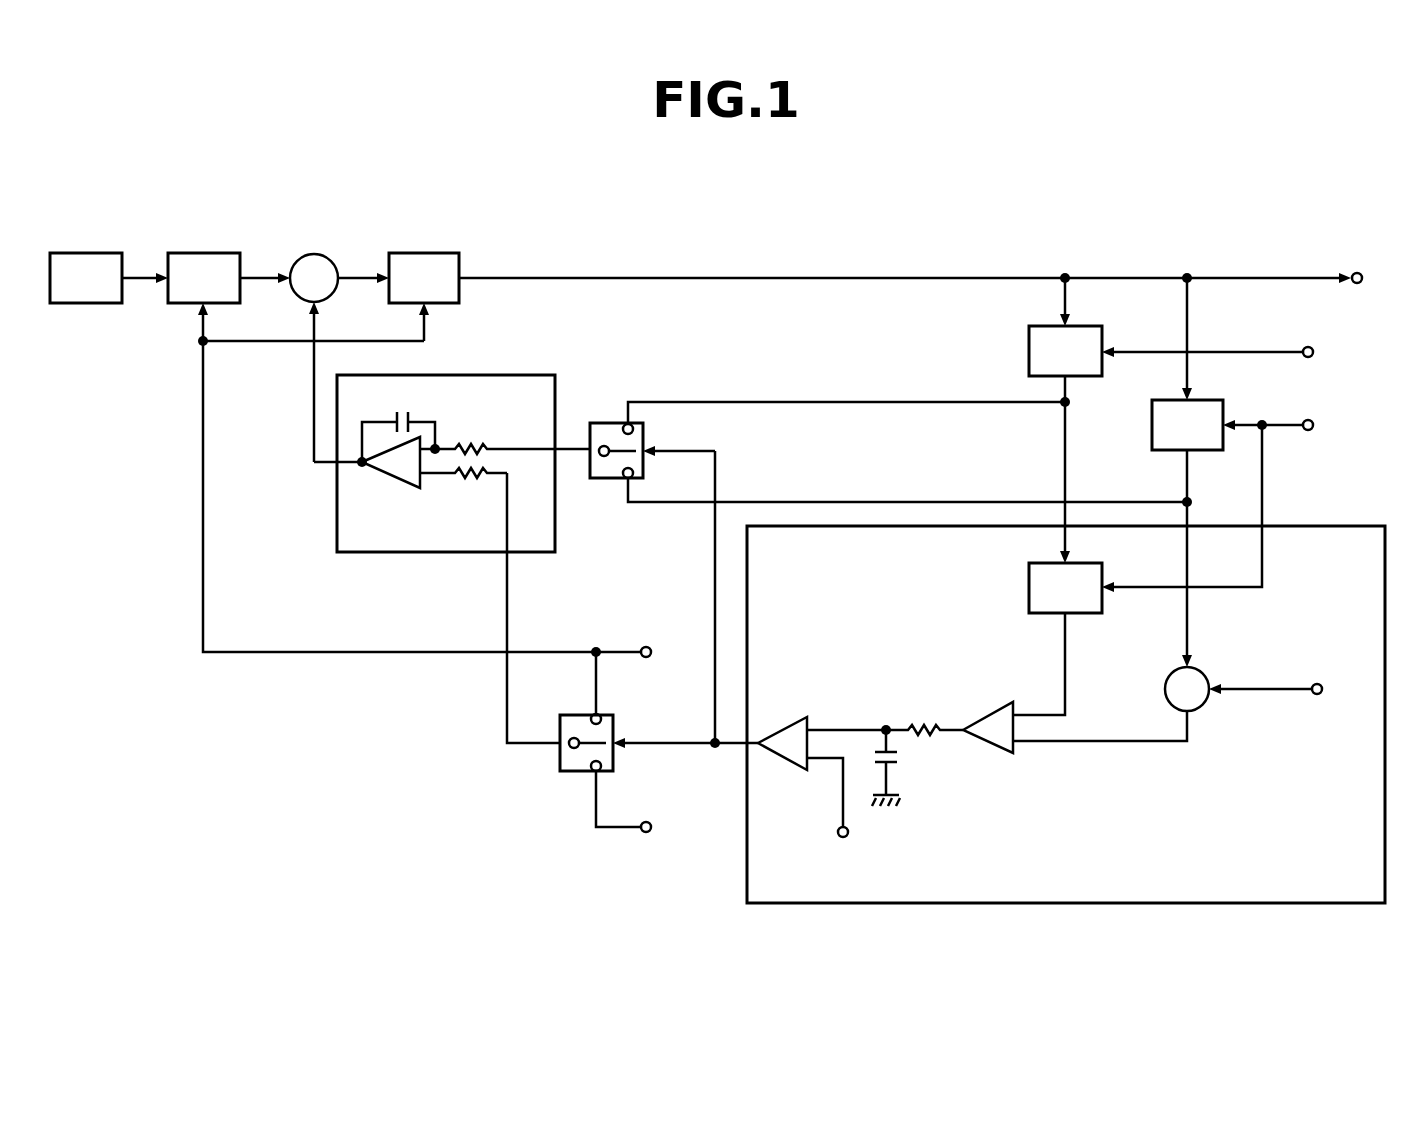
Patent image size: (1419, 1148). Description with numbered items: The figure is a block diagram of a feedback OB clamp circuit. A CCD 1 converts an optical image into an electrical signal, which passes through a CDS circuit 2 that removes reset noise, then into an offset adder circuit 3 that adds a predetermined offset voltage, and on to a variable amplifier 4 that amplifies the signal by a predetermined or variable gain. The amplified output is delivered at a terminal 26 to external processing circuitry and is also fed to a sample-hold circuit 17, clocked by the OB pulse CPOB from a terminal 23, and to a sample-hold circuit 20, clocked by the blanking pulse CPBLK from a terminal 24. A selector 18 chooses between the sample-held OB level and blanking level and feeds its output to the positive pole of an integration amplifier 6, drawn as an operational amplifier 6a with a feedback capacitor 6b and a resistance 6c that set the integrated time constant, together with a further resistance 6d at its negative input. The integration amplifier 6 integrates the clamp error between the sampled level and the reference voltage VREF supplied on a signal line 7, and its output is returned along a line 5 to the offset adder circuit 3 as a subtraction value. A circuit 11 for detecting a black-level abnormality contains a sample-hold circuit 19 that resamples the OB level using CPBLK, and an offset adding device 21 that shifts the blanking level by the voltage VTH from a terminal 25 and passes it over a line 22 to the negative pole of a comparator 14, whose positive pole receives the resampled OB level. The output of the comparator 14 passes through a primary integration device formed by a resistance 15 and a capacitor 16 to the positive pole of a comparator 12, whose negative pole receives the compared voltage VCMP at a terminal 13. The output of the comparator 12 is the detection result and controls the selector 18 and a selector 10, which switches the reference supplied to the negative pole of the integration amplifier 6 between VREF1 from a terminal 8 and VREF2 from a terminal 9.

The CCD 1 is at (100, 253).
The CDS circuit 2 is at (220, 253).
The offset adder circuit 3 is at (331, 260).
The variable amplifier 4 is at (440, 253).
The clamp signal line 5 is at (314, 380).
The integration amplifier 6 is at (505, 375).
The operational amplifier 6a is at (395, 485).
The capacitor 6b is at (410, 417).
The resistance 6c is at (487, 448).
The resistor 6d is at (472, 482).
The signal line 7 is at (507, 578).
The terminal 8 is at (646, 647).
The VREF2 terminal 9 is at (646, 832).
The selector 10 is at (613, 730).
The circuit for detecting an abnormality of a black level 11 is at (747, 800).
The comparator 12 is at (810, 724).
The VCMP terminal 13 is at (850, 832).
The comparator 14 is at (986, 710).
The resistance 15 is at (916, 722).
The capacitor 16 is at (900, 760).
The sample-hold circuit 17 is at (1093, 326).
The selector 18 is at (612, 423).
The sample-hold circuit 19 is at (1102, 577).
The sample-hold circuit 20 is at (1225, 412).
The offset adding device 21 is at (1205, 672).
The threshold signal line 22 is at (1124, 741).
The terminal 23 is at (1312, 348).
The terminal 24 is at (1312, 421).
The VTH terminal 25 is at (1321, 685).
The terminal 26 is at (1357, 272).